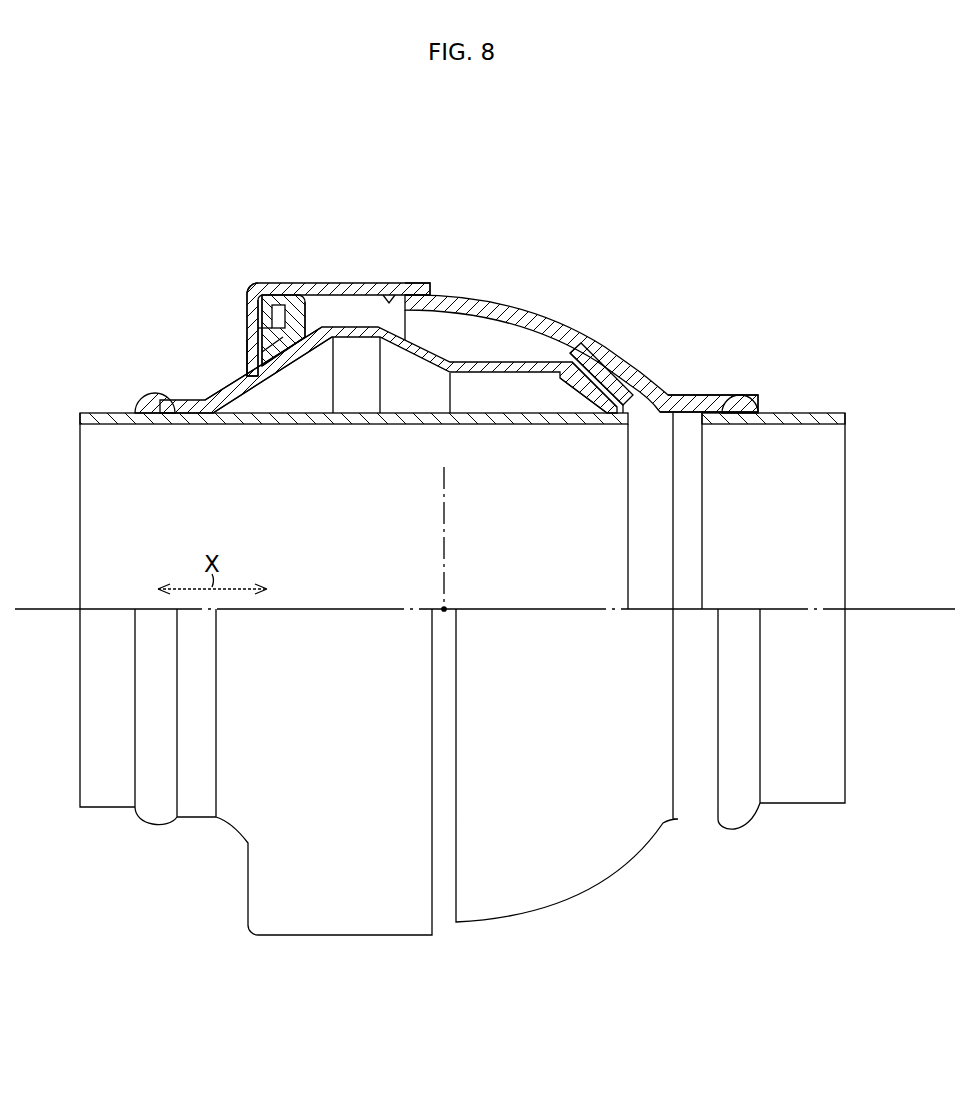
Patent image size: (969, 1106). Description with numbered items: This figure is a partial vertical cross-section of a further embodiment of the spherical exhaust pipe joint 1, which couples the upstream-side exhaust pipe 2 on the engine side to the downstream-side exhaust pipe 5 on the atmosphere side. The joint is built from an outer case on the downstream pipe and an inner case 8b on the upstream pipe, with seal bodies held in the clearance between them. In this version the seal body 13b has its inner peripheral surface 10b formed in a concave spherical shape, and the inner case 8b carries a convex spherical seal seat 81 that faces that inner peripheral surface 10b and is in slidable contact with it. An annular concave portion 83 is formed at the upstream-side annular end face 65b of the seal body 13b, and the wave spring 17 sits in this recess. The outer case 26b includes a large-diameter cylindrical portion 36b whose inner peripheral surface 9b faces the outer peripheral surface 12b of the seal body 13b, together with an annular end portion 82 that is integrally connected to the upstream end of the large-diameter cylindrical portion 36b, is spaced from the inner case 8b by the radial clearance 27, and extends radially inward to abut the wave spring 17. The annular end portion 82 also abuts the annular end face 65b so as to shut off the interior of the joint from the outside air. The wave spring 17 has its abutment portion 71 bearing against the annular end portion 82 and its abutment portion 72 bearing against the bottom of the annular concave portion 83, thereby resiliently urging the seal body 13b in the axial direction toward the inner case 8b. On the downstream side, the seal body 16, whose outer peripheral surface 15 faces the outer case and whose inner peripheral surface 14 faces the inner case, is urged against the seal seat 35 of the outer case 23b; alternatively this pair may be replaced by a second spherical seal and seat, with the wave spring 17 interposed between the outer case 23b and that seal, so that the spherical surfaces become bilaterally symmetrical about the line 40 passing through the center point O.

The spherical exhaust pipe joint 1 is at (461, 348).
The upstream-side exhaust pipe 2 is at (103, 413).
The downstream-side exhaust pipe 5 is at (818, 413).
The inner case 8b is at (480, 370).
The inner peripheral surface 9b is at (389, 300).
The inner peripheral surface 10b is at (291, 353).
The outer peripheral surface 12b is at (272, 296).
The seal body 13b is at (283, 338).
The inner peripheral surface 14 is at (583, 393).
The outer peripheral surface 15 is at (622, 368).
The seal body 16 is at (601, 362).
The wave spring 17 is at (251, 322).
The outer case 23b is at (570, 330).
The outer case 26b is at (247, 297).
The radial clearance 27 is at (245, 376).
The seal seat 35 is at (643, 373).
The large-diameter cylindrical portion 36b is at (428, 288).
The line 40 is at (444, 562).
The upstream-side annular end face 65b is at (247, 352).
The abutment portion 71 is at (247, 305).
The abutment portion 72 is at (258, 303).
The convex spherical seal seat 81 is at (292, 340).
The annular end portion 82 is at (258, 318).
The annular concave portion 83 is at (306, 312).
The center point O is at (443, 608).